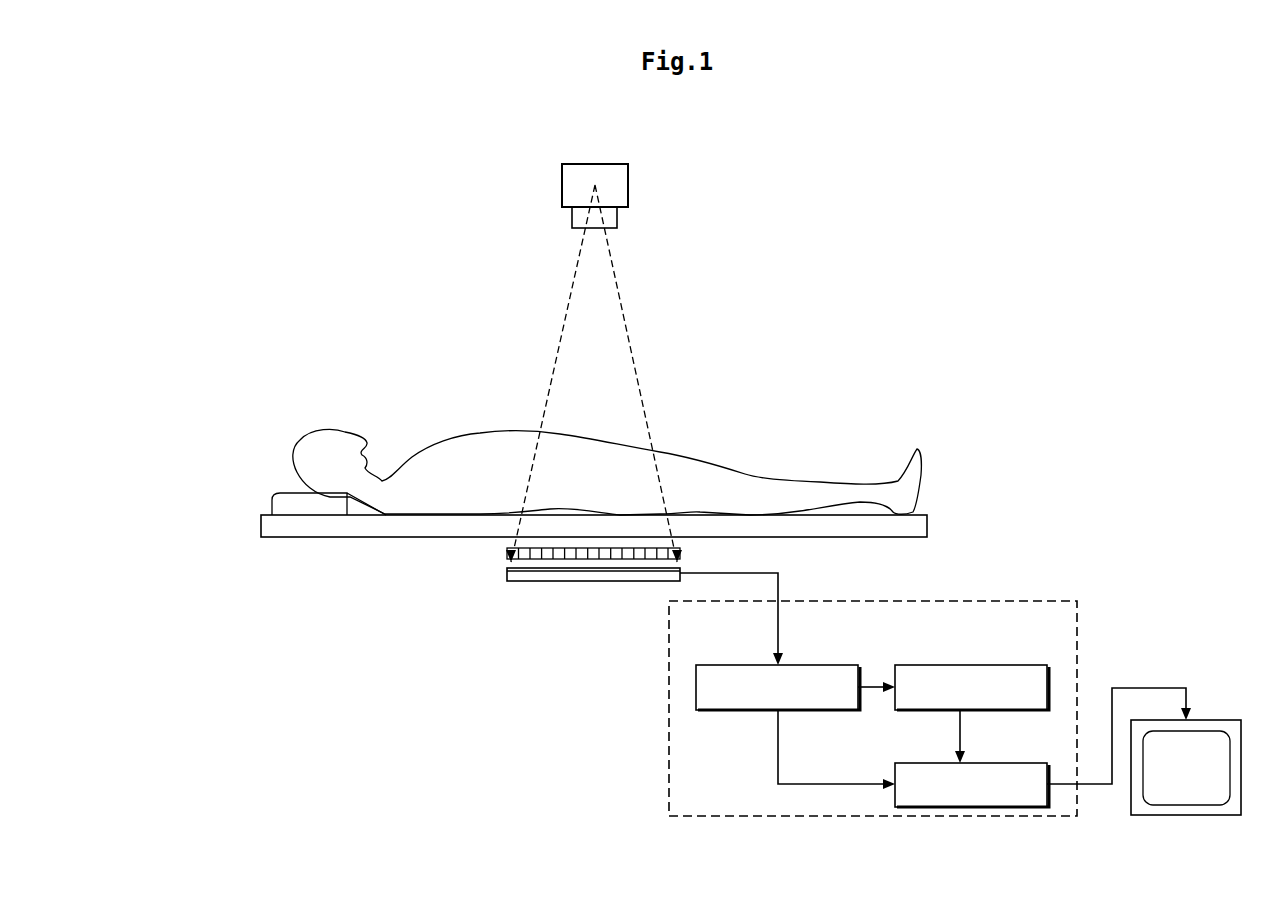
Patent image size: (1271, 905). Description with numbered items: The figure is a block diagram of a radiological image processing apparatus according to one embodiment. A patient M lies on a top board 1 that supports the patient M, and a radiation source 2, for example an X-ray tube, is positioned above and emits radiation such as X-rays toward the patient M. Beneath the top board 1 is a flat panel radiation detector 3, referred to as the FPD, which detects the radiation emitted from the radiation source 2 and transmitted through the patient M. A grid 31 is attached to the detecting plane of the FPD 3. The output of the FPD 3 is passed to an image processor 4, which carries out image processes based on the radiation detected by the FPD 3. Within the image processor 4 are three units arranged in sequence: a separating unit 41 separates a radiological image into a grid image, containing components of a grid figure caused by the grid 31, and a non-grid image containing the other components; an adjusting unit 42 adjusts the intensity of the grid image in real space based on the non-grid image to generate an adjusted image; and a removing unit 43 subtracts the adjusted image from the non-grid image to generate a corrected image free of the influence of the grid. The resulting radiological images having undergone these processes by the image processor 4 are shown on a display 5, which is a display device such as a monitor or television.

The top board 1 is at (266, 522).
The radiation source 2 is at (600, 170).
The flat panel radiation detector 3 is at (566, 581).
The grid 31 is at (526, 548).
The image processor 4 is at (873, 726).
The separating unit 41 is at (819, 667).
The adjusting unit 42 is at (1002, 667).
The removing unit 43 is at (1002, 765).
The display 5 is at (1208, 723).
The patient M is at (594, 439).